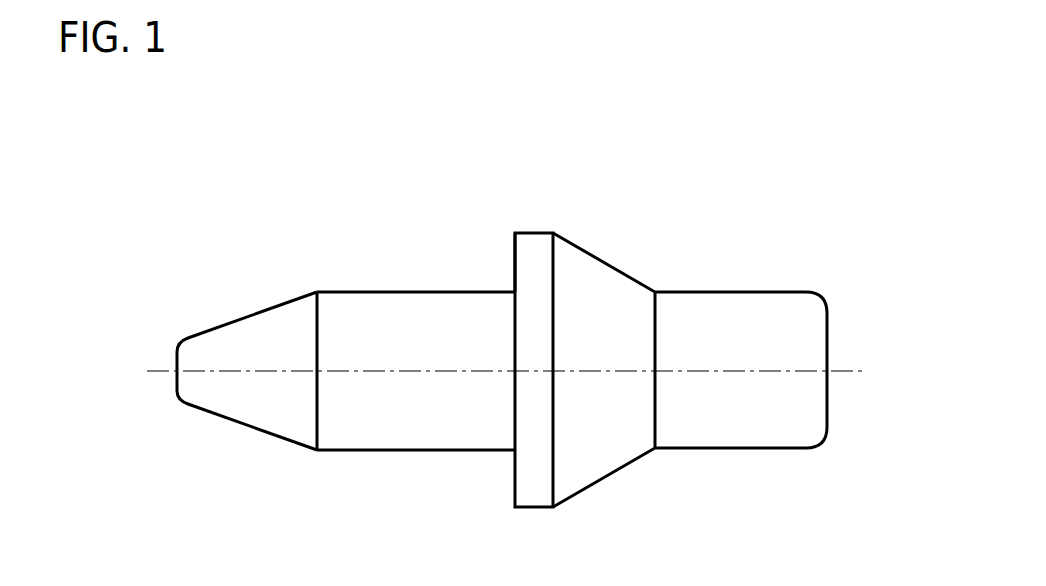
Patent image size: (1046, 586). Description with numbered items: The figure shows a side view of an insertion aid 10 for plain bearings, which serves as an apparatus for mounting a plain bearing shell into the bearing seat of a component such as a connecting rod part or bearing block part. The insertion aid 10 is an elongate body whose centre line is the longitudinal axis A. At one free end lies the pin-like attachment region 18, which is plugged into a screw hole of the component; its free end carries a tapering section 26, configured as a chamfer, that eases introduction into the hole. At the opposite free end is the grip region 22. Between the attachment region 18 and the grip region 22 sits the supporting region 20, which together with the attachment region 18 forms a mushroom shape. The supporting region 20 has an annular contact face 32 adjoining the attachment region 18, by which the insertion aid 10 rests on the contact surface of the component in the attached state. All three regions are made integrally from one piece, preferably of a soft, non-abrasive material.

The insertion aid 10 is at (548, 110).
The attachment region 18 is at (322, 290).
The supporting region 20 is at (522, 232).
The grip region 22 is at (783, 292).
The tapering section 26 is at (248, 343).
The contact face 32 is at (512, 277).
The longitudinal axis A is at (807, 370).